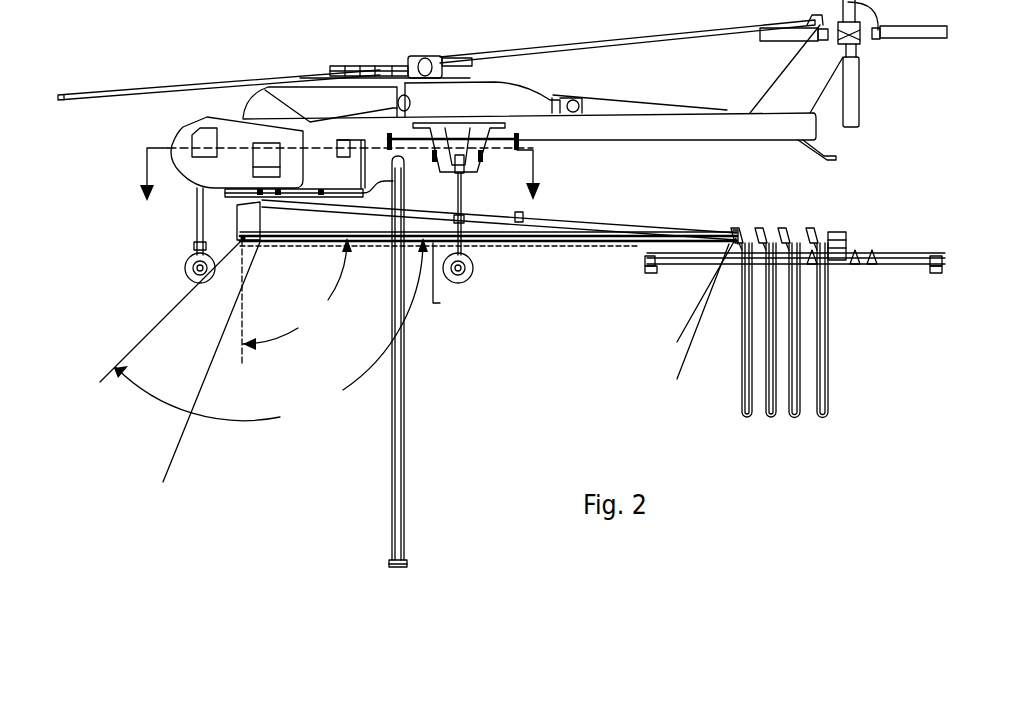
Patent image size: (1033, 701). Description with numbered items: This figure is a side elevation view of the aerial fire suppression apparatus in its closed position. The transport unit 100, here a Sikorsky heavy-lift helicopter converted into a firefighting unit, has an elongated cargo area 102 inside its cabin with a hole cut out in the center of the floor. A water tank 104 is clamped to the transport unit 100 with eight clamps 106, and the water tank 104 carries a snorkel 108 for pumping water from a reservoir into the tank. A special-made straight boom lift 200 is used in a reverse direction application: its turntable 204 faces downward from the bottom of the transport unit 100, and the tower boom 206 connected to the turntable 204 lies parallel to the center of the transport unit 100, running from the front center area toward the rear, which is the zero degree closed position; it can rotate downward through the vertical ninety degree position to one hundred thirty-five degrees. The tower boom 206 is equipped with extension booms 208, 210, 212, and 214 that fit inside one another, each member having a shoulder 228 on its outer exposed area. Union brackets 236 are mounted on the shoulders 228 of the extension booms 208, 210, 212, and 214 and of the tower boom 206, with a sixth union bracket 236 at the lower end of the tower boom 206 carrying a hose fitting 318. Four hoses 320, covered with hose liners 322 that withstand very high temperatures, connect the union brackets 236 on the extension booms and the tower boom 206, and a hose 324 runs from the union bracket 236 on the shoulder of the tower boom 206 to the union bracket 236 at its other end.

The transport unit 100 is at (502, 80).
The cargo area 102 is at (283, 128).
The water tank 104 is at (493, 167).
The clamps 106 is at (390, 133).
The snorkel 108 is at (398, 536).
The straight boom lift 200 is at (243, 218).
The turntable 204 is at (243, 230).
The tower boom 206 is at (670, 232).
The extension boom 208 is at (748, 237).
The extension boom 210 is at (780, 233).
The extension boom 212 is at (807, 233).
The extension boom 214 is at (833, 237).
The shoulder 228 is at (677, 379).
The union bracket 236 is at (677, 342).
The hose fitting 318 is at (270, 240).
The hoses 320 is at (743, 392).
The hose liners 322 is at (742, 410).
The hose 324 is at (283, 247).